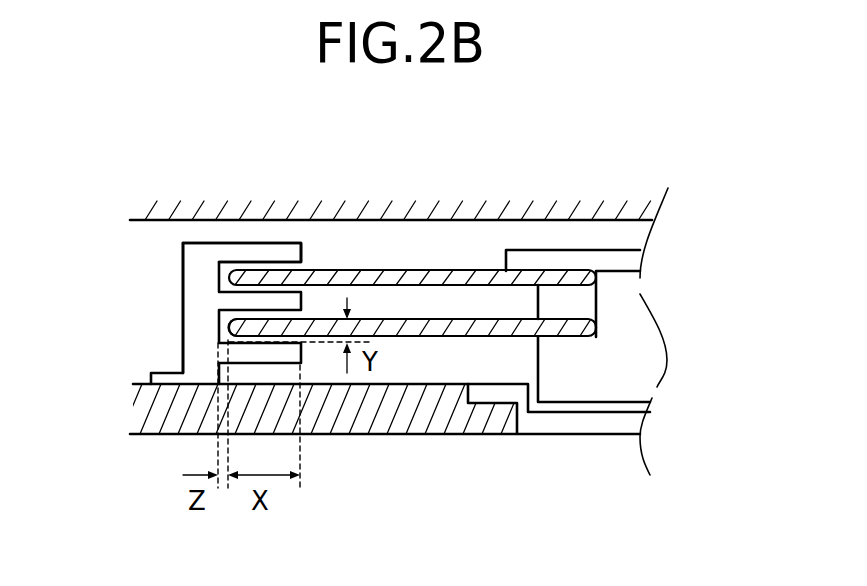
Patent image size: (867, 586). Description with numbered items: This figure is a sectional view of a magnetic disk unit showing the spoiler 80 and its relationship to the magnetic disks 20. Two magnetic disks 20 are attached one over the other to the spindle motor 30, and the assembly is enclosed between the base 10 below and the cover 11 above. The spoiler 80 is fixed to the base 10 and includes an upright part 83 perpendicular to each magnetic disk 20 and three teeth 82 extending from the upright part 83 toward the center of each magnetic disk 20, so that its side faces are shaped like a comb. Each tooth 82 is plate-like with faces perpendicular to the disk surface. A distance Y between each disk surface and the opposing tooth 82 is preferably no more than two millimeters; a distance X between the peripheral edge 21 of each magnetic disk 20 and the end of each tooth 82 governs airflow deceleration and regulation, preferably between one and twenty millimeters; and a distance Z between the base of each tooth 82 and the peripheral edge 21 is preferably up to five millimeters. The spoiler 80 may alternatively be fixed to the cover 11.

The base 10 is at (356, 415).
The cover 11 is at (345, 208).
The magnetic disk 20 is at (440, 273).
The peripheral edge 21 is at (227, 323).
The spindle motor 30 is at (607, 387).
The spoiler 80 is at (185, 290).
The tooth 82 is at (248, 243).
The upright part 83 is at (198, 273).